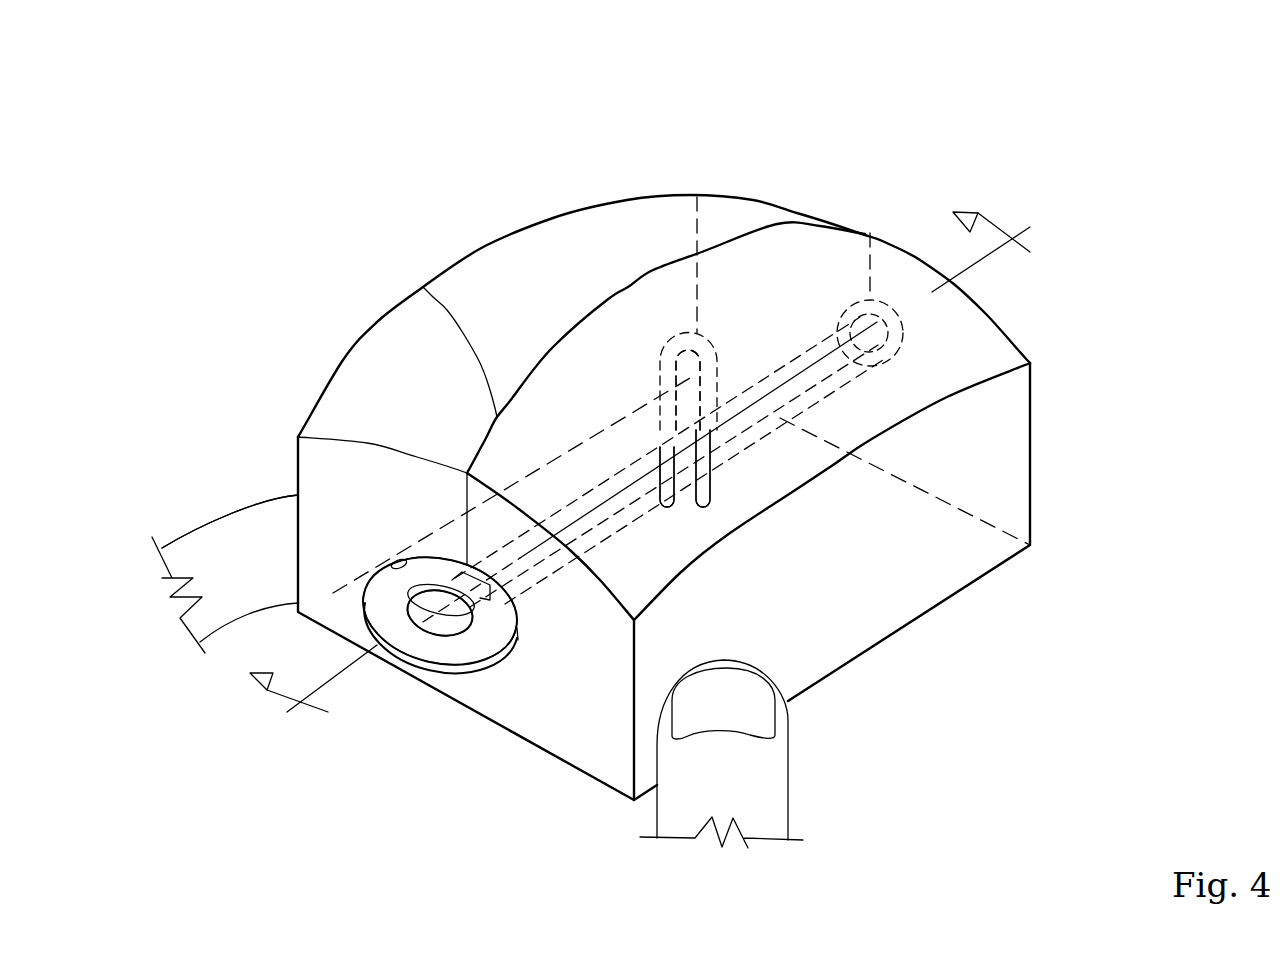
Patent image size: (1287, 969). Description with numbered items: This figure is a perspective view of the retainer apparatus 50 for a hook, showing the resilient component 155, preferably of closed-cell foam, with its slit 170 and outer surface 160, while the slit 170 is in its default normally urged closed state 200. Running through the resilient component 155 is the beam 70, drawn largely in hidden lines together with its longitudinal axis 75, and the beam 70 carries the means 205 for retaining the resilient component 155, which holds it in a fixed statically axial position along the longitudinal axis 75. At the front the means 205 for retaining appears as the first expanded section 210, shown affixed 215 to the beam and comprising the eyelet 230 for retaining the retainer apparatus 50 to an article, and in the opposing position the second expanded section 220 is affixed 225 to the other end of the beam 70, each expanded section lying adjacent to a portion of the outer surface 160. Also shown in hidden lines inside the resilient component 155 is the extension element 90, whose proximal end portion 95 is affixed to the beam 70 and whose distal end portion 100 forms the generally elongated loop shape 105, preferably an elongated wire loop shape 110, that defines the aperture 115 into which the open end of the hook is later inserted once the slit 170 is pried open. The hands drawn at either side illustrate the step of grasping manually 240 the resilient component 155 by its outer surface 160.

The retainer apparatus 50 is at (736, 475).
The beam 70 is at (535, 575).
The longitudinal axis 75 is at (987, 257).
The extension element 90 is at (715, 382).
The proximal end portion 95 is at (670, 440).
The distal end portion 100 is at (687, 333).
The elongated loop shape 105 is at (688, 390).
The elongated wire loop shape 110 is at (685, 468).
The aperture 115 is at (685, 432).
The resilient component 155 is at (343, 362).
The outer surface 160 is at (450, 388).
The slit 170 is at (419, 286).
The closed state 200 is at (238, 403).
The means for retaining 205 is at (423, 652).
The first expanded section 210 is at (439, 611).
The affixed 215 is at (467, 575).
The second expanded section 220 is at (893, 337).
The affixed 225 is at (887, 357).
The eyelet 230 is at (440, 613).
The grasping manually 240 is at (240, 527).